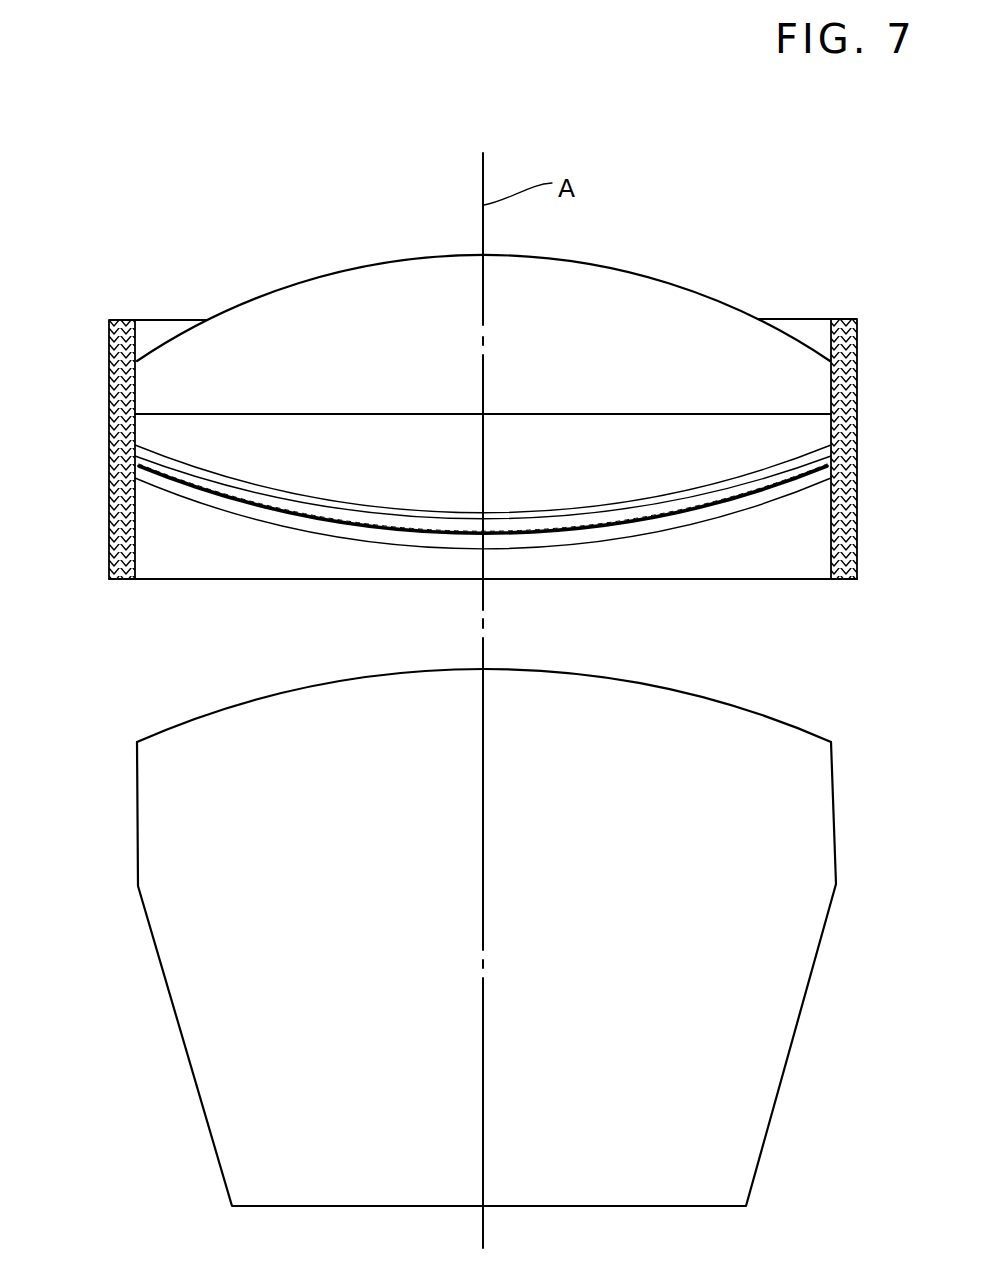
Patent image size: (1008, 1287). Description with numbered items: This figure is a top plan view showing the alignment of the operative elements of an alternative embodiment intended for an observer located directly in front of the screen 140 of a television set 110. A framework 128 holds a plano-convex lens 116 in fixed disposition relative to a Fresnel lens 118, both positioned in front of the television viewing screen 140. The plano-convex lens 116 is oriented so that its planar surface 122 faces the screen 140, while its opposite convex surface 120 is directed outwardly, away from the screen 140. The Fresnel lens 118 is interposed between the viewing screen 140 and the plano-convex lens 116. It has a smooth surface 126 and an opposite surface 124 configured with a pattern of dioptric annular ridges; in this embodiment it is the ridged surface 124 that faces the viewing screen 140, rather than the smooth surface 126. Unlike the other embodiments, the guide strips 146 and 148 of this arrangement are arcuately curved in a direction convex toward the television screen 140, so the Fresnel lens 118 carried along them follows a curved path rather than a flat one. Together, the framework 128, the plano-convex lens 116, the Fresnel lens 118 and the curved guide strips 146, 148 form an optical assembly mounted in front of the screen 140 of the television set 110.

The television set 110 is at (450, 932).
The plano-convex lens 116 is at (483, 383).
The Fresnel lens 118 is at (483, 542).
The convex surface 120 is at (338, 272).
The planar surface 122 is at (606, 418).
The surface configured with dioptric ridges 124 is at (513, 538).
The smooth surface 126 is at (455, 533).
The framework 128 is at (859, 537).
The screen 140 is at (163, 730).
The guide strip 146 is at (257, 513).
The guide strip 148 is at (272, 495).